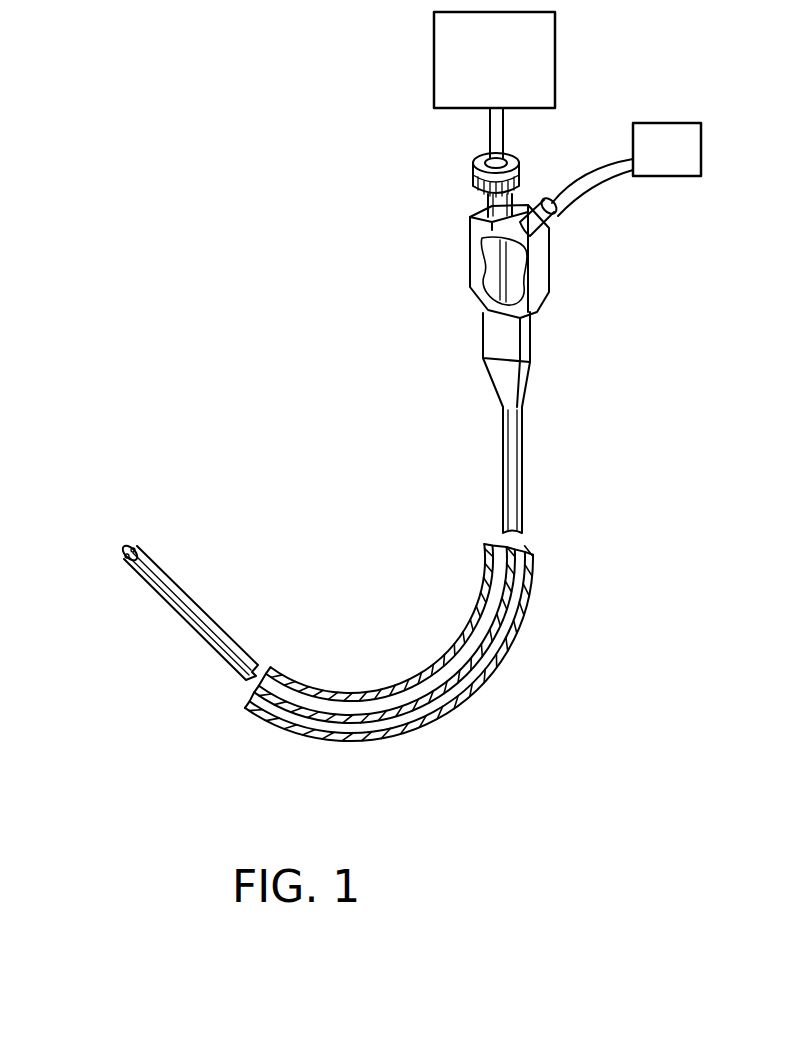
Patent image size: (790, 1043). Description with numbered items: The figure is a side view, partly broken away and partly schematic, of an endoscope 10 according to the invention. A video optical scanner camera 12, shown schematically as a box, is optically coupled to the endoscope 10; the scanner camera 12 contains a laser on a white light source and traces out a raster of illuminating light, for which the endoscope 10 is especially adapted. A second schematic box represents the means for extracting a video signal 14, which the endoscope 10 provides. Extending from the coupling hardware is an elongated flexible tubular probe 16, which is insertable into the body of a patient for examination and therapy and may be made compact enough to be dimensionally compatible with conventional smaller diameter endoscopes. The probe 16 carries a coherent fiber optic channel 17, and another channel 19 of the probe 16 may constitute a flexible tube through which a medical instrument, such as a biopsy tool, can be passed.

The endoscope 10 is at (312, 290).
The video optical scanner camera 12 is at (476, 107).
The means for extracting a video signal 14 is at (654, 122).
The elongated flexible tubular probe 16 is at (186, 602).
The coherent fiber optic channel 17 is at (126, 546).
The channel 19 is at (120, 553).